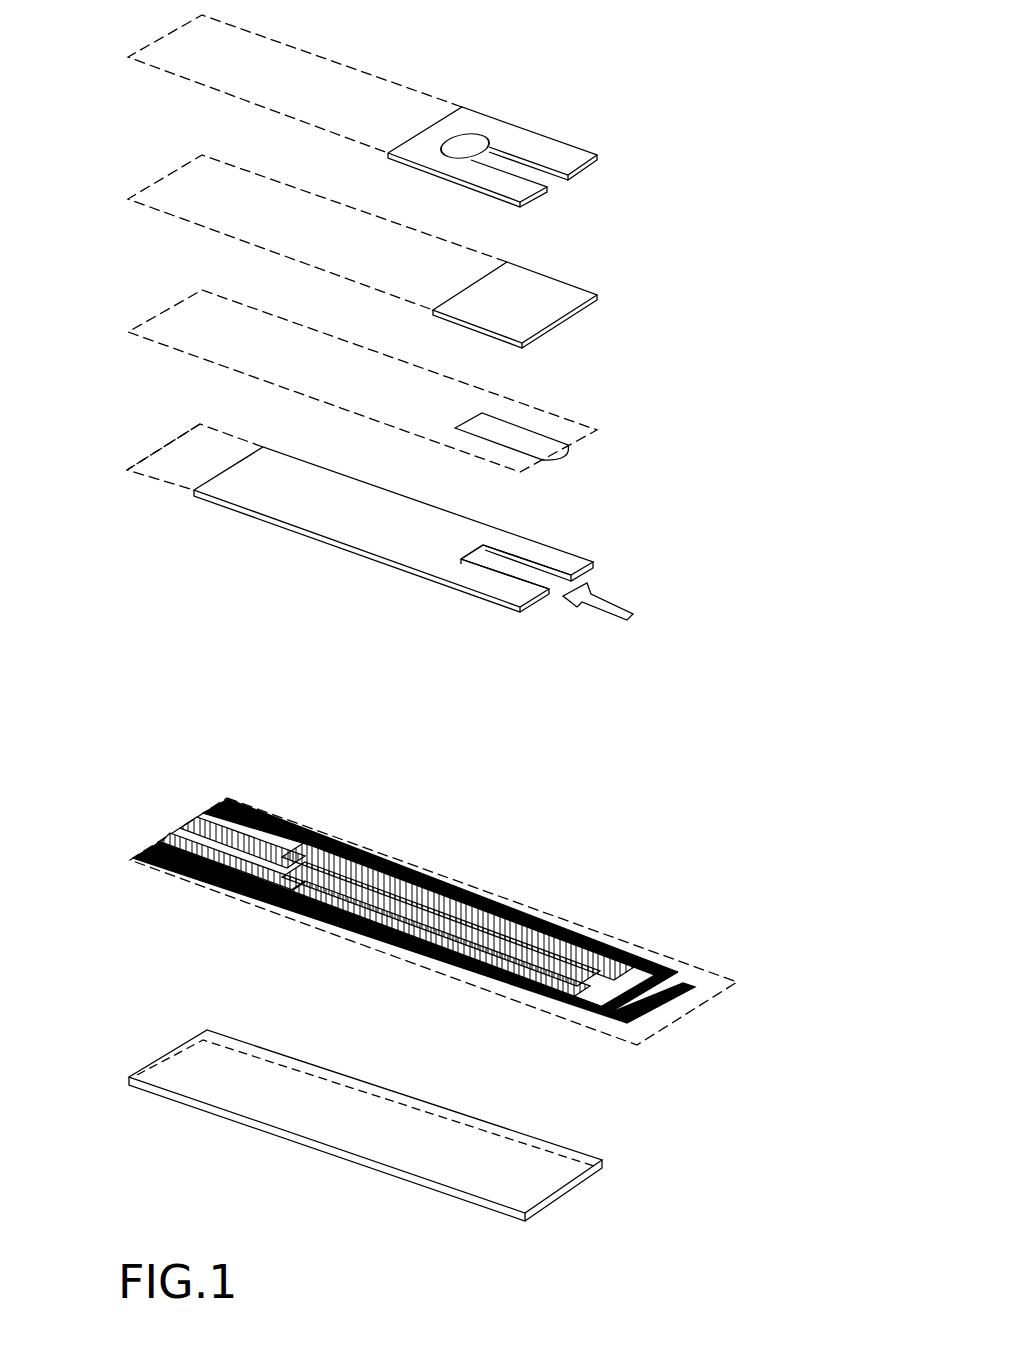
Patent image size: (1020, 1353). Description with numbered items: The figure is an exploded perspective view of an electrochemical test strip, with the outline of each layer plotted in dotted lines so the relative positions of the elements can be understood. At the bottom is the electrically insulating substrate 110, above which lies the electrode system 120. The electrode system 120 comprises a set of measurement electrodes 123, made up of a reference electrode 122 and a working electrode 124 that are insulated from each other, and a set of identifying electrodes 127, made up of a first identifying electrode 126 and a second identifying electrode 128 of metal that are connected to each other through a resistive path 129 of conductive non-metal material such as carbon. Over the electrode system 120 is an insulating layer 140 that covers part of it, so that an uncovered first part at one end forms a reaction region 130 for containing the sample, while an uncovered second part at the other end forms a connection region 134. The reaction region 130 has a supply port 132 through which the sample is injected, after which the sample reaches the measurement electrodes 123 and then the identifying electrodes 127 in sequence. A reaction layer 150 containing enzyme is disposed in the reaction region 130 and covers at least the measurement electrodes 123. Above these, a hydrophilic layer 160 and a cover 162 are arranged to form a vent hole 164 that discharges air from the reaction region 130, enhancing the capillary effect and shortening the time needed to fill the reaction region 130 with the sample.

The insulating substrate 110 is at (622, 1163).
The electrode system 120 is at (720, 1025).
The reference electrode 122 is at (693, 983).
The set of measurement electrodes 123 is at (683, 910).
The working electrode 124 is at (638, 982).
The first identifying electrode 126 is at (165, 842).
The set of identifying electrodes 127 is at (372, 856).
The second identifying electrode 128 is at (193, 827).
The resistive path 129 is at (437, 883).
The reaction region 130 is at (503, 563).
The supply port 132 is at (621, 616).
The connection region 134 is at (185, 462).
The insulating layer 140 is at (613, 565).
The reaction layer 150 is at (578, 456).
The hydrophilic layer 160 is at (622, 298).
The cover 162 is at (622, 155).
The vent hole 164 is at (467, 145).